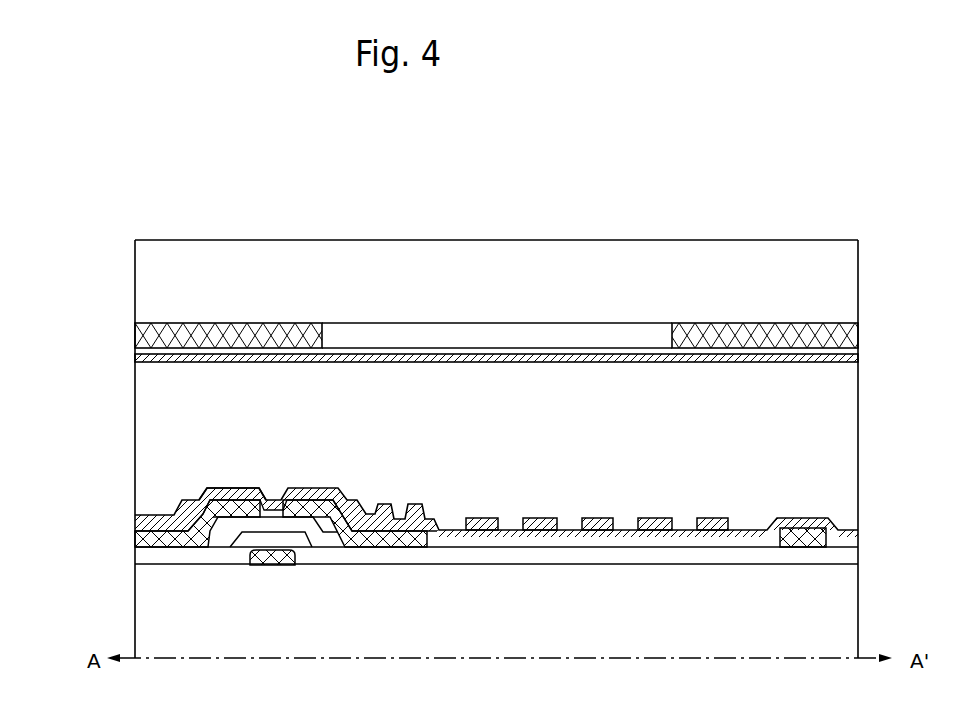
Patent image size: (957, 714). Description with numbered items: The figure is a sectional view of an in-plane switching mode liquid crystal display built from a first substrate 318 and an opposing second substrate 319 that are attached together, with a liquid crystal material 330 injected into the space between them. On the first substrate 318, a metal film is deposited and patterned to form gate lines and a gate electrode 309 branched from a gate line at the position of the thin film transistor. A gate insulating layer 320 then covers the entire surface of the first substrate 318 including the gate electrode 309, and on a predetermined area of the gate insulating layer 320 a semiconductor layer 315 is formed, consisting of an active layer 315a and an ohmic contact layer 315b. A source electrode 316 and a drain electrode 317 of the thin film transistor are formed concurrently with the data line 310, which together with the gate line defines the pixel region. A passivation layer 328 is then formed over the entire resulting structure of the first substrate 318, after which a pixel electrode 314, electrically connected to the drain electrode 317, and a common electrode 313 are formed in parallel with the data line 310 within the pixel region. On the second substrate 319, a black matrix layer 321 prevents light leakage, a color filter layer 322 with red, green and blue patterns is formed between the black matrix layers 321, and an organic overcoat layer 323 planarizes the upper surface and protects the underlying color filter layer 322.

The gate electrode 309 is at (275, 556).
The data line 310 is at (802, 528).
The common electrode 313 is at (706, 518).
The pixel electrode 314 is at (652, 518).
The semiconductor layer 315 is at (182, 566).
The active layer 315a is at (215, 540).
The ohmic contact layer 315b is at (212, 535).
The source electrode 316 is at (232, 510).
The drain electrode 317 is at (338, 513).
The first substrate 318 is at (847, 608).
The second substrate 319 is at (148, 278).
The gate insulating layer 320 is at (847, 563).
The black matrix layer 321 is at (150, 335).
The color filter layer 322 is at (506, 335).
The organic overcoat layer 323 is at (148, 357).
The passivation layer 328 is at (858, 537).
The liquid crystal material 330 is at (847, 421).